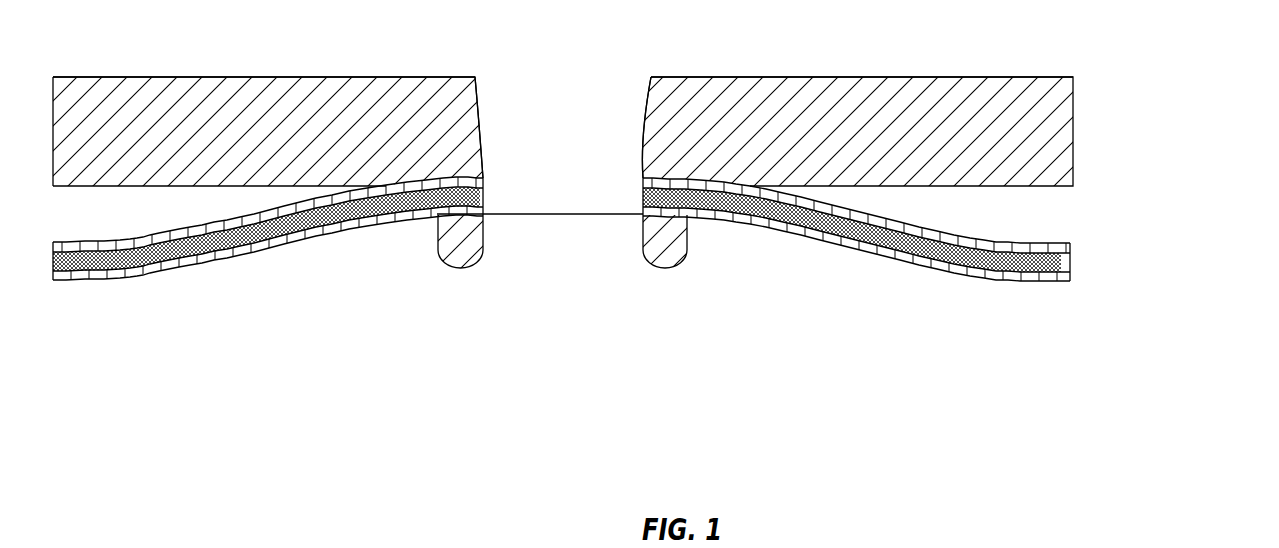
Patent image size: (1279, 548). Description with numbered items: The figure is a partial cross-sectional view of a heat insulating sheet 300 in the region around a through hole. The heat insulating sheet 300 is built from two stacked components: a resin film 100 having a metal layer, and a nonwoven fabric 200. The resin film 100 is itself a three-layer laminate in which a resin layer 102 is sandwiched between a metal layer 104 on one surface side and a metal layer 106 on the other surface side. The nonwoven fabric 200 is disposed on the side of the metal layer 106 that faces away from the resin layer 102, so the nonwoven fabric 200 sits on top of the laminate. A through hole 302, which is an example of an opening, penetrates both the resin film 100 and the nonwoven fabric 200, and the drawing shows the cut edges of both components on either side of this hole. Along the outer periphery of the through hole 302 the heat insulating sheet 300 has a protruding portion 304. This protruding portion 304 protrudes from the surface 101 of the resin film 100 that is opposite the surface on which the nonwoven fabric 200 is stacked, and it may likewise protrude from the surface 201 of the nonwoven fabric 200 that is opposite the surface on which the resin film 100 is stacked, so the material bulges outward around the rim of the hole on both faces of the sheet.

The resin film having a metal layer 100 is at (633, 250).
The surface of the resin film having the metal layer 101 is at (880, 247).
The resin layer 102 is at (1078, 262).
The metal layer 104 is at (1078, 277).
The metal layer 106 is at (1078, 247).
The nonwoven fabric 200 is at (1048, 133).
The surface of the nonwoven fabric 201 is at (853, 77).
The heat insulating sheet 300 is at (637, 167).
The through hole 302 is at (560, 100).
The protruding portion 304 is at (665, 247).